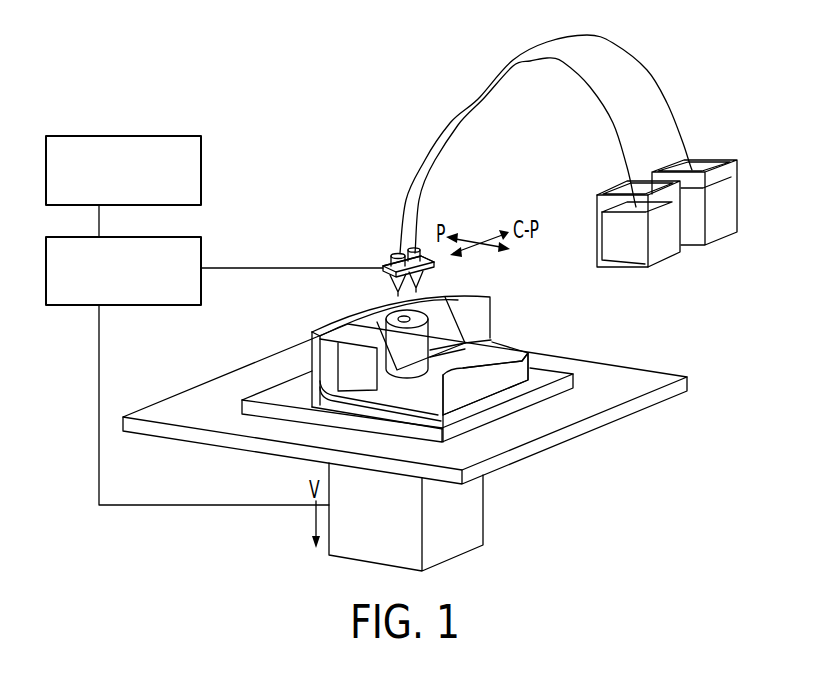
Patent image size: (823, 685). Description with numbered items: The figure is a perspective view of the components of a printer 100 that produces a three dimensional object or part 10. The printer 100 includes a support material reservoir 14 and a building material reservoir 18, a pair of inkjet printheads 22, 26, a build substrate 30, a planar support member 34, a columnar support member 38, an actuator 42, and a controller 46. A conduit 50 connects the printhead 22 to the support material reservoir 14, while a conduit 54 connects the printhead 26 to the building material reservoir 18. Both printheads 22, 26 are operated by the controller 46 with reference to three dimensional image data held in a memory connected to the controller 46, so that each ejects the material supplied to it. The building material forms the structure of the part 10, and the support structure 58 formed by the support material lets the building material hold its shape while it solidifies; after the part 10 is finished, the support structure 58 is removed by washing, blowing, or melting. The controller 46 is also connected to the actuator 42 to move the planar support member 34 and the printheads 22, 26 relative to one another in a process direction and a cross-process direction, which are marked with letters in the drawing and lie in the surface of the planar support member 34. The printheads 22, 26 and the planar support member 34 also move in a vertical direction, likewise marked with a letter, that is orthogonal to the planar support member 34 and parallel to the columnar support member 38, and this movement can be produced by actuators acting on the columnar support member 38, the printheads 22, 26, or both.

The printer 100 is at (336, 107).
The part 10 is at (496, 362).
The support material reservoir 14 is at (665, 246).
The building material reservoir 18 is at (712, 236).
The inkjet printhead 22 is at (366, 285).
The inkjet printhead 26 is at (441, 279).
The build substrate 30 is at (499, 412).
The planar support member 34 is at (546, 463).
The columnar support member 38 is at (491, 533).
The actuator 42 is at (202, 248).
The controller 46 is at (202, 170).
The conduit 50 is at (615, 128).
The conduit 54 is at (648, 82).
The support structure 58 is at (491, 336).